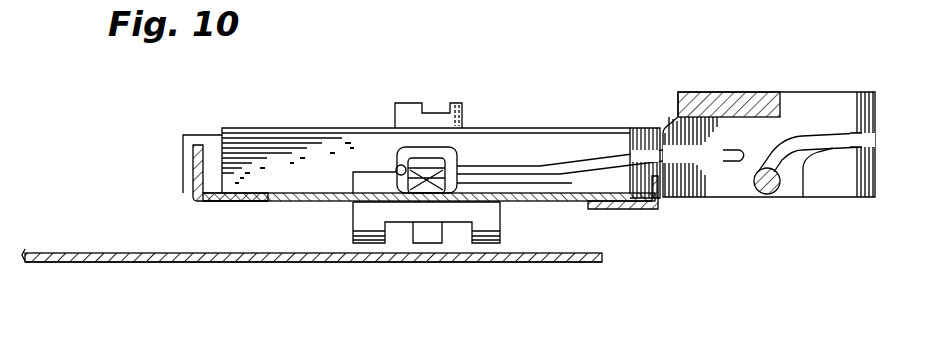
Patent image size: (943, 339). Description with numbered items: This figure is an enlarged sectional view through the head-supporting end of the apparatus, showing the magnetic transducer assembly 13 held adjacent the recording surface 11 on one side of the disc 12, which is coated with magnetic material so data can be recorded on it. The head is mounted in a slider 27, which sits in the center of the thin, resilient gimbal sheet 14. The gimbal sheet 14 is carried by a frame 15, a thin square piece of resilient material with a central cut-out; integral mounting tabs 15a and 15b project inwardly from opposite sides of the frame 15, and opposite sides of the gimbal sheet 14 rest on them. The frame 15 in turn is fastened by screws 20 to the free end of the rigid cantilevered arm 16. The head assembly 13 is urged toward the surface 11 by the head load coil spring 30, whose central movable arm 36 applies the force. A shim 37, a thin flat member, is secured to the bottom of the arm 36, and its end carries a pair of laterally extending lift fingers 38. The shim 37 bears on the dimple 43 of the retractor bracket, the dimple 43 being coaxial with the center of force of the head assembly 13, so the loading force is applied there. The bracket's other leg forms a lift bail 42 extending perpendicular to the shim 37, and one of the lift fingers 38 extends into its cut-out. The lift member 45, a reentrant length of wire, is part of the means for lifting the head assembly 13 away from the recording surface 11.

The recording surface 11 is at (106, 252).
The disc 12 is at (135, 263).
The magnetic transducer assembly 13 is at (408, 243).
The gimbal sheet 14 is at (318, 191).
The frame 15 is at (193, 157).
The mounting tab 15a is at (248, 208).
The mounting tab 15b is at (629, 209).
The rigid cantilevered arm 16 is at (733, 126).
The screws 20 is at (445, 107).
The slider 27 is at (354, 222).
The head load coil spring 30 is at (624, 140).
The movable arm 36 is at (540, 165).
The shim 37 is at (570, 184).
The lift fingers 38 is at (410, 164).
The lift bail 42 is at (450, 153).
The dimple 43 is at (437, 178).
The lift member 45 is at (835, 132).